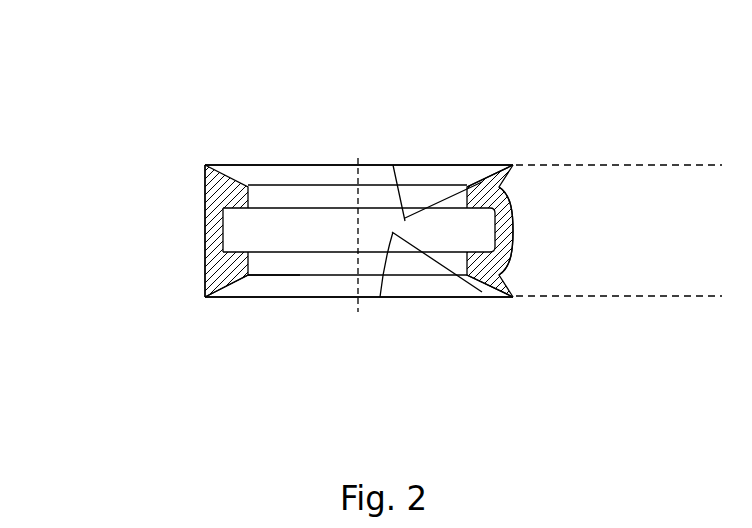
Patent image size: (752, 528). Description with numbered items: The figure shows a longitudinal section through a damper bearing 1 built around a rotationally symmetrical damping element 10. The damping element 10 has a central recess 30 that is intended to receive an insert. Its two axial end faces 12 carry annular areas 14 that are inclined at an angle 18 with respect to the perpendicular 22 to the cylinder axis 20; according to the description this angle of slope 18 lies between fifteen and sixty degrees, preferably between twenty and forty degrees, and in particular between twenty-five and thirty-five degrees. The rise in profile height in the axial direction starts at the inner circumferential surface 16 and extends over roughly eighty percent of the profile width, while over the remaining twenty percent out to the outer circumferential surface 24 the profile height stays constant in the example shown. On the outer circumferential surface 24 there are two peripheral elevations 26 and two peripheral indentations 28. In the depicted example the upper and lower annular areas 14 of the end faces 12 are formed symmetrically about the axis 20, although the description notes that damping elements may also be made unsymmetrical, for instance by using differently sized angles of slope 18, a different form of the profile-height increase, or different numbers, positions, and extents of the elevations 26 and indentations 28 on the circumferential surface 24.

The damper bearing 1 is at (167, 108).
The damping element 10 is at (207, 190).
The axial end face 12 is at (268, 163).
The annular area 14 is at (477, 167).
The inner circumferential surface 16 is at (270, 297).
The angle of slope 18 is at (413, 297).
The cylinder axis 20 is at (358, 157).
The perpendicular to the axis 22 is at (608, 163).
The outer circumferential surface 24 is at (513, 227).
The peripheral elevation 26 is at (515, 248).
The peripheral indentation 28 is at (207, 277).
The recess 30 is at (207, 250).